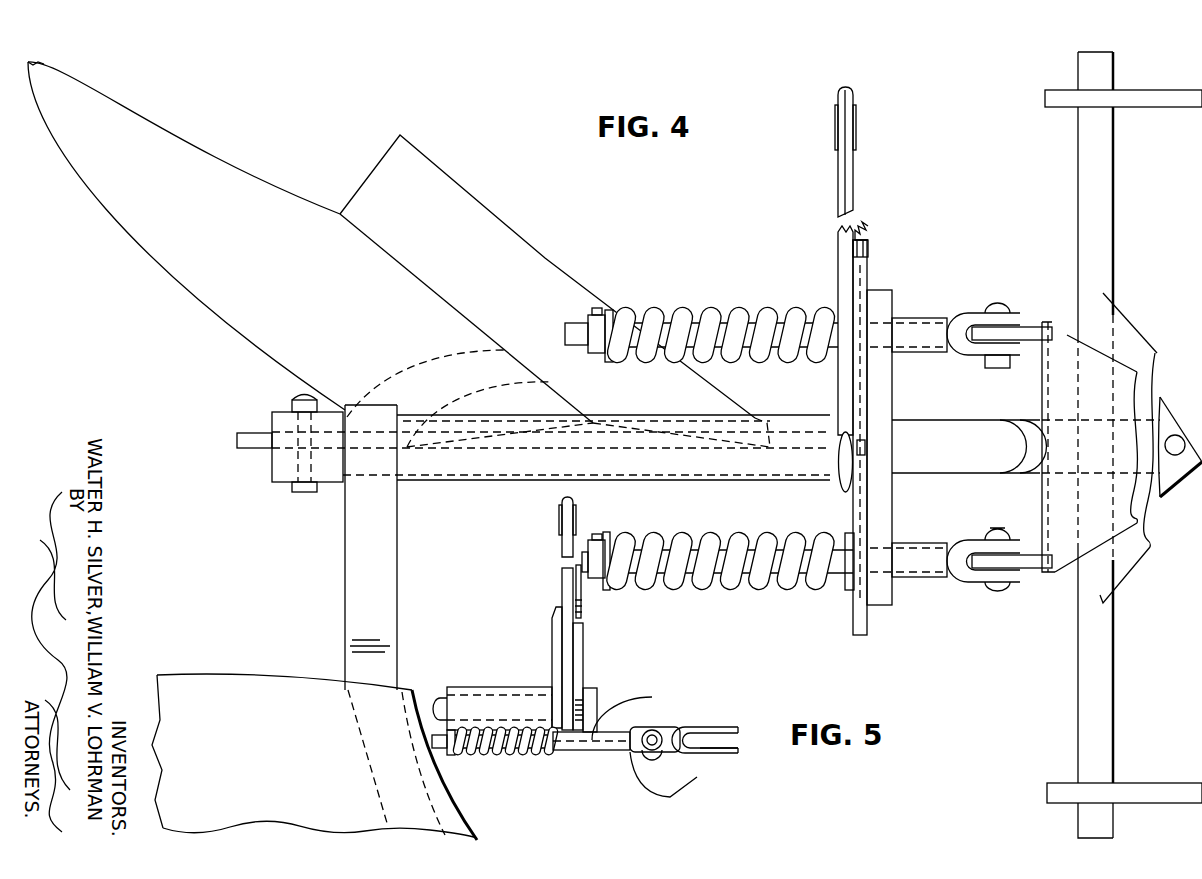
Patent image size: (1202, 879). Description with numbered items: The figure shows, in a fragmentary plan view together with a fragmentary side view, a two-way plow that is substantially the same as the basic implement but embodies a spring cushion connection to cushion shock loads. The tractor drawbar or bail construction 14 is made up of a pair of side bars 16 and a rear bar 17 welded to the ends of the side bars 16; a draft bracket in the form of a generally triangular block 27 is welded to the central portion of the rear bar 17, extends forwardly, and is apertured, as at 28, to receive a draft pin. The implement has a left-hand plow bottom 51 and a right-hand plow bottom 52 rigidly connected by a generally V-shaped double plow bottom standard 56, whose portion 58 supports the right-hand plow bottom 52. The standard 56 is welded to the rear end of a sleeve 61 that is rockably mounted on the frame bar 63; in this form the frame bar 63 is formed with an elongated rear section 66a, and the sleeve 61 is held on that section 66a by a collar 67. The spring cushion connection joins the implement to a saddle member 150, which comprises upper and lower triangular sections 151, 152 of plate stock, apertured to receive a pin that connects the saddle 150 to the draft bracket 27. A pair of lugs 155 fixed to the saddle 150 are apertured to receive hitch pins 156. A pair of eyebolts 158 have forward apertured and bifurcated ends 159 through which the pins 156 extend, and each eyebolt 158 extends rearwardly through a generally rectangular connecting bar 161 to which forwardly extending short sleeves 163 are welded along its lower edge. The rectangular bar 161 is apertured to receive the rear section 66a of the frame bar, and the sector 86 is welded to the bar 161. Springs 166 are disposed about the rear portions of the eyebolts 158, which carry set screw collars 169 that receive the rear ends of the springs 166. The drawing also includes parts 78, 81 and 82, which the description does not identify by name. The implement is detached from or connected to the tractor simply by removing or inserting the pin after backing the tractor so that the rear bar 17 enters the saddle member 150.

In FIG. 4, the tractor drawbar 14 is at (1070, 735).
In FIG. 4, the side bars 16 is at (1178, 97).
In FIG. 4, the rear bar 17 is at (1098, 650).
In FIG. 4, the draft bracket 27 is at (1150, 346).
In FIG. 4, the aperture 28 is at (1176, 435).
In FIG. 4, the left-hand plow bottom 51 is at (262, 162).
In FIG. 4, the right-hand plow bottom 52 is at (253, 686).
In FIG. 4, the double plow bottom standard 56 is at (335, 536).
In FIG. 4, the standard portion 58 is at (386, 546).
In FIG. 4, the sleeve 61 is at (488, 415).
In FIG. 5, the sleeve 61 is at (497, 690).
In FIG. 5, the frame bar 63 is at (688, 791).
In FIG. 4, the elongated rear section 66a is at (925, 428).
In FIG. 5, the elongated rear section 66a is at (440, 700).
In FIG. 4, the collar 67 is at (280, 485).
In FIG. 5, the plate 78 is at (553, 634).
In FIG. 4, the blade plate 81 is at (845, 450).
In FIG. 5, the blade plate 81 is at (552, 583).
In FIG. 4, the knife 82 is at (847, 186).
In FIG. 4, the sector 86 is at (883, 510).
In FIG. 5, the sector 86 is at (593, 645).
In FIG. 4, the saddle member 150 is at (1083, 330).
In FIG. 5, the saddle member 150 is at (700, 716).
In FIG. 4, the upper triangular section 151 is at (1105, 355).
In FIG. 5, the upper triangular section 151 is at (722, 727).
In FIG. 5, the lower triangular section 152 is at (723, 758).
In FIG. 4, the lugs 155 is at (988, 310).
In FIG. 5, the lugs 155 is at (665, 735).
In FIG. 4, the hitch pins 156 is at (991, 368).
In FIG. 5, the hitch pins 156 is at (656, 752).
In FIG. 4, the eyebolts 158 is at (752, 330).
In FIG. 5, the eyebolts 158 is at (488, 757).
In FIG. 4, the bifurcated ends 159 is at (965, 318).
In FIG. 4, the connecting bar 161 is at (874, 295).
In FIG. 5, the connecting bar 161 is at (594, 692).
In FIG. 4, the short sleeves 163 is at (913, 322).
In FIG. 5, the short sleeves 163 is at (607, 738).
In FIG. 4, the springs 166 is at (686, 315).
In FIG. 5, the springs 166 is at (518, 757).
In FIG. 4, the set screw collars 169 is at (596, 332).
In FIG. 5, the set screw collars 169 is at (444, 750).